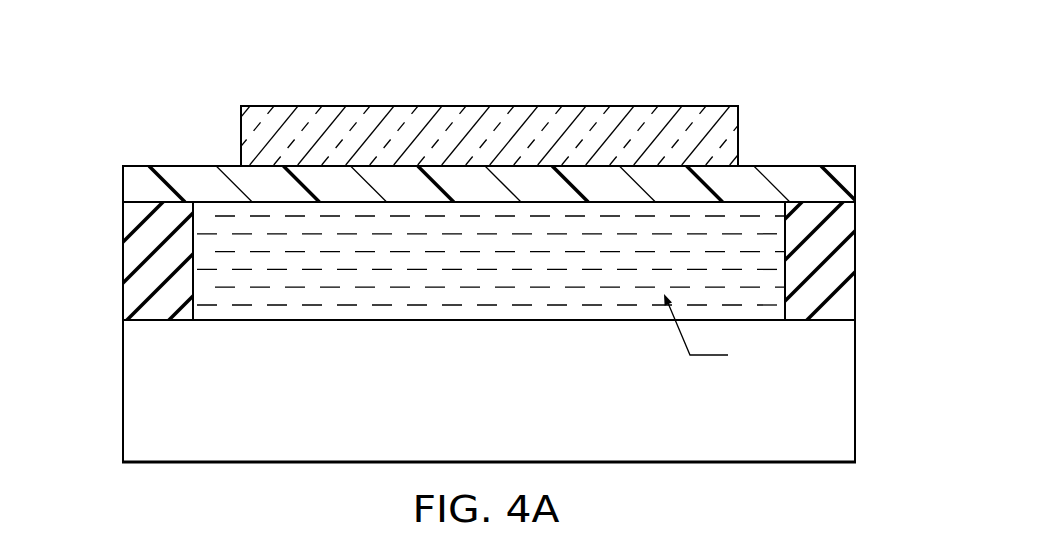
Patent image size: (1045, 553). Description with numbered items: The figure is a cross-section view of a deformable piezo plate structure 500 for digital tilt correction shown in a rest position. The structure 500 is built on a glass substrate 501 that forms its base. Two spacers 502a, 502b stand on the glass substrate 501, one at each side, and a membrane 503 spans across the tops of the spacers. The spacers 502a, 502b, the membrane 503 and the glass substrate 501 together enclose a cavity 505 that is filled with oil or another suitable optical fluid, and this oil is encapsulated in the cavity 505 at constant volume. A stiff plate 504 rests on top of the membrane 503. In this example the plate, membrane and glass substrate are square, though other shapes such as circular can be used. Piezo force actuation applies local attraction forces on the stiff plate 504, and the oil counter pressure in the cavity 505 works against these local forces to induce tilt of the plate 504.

The electrowetting display device 500 is at (340, 63).
The substrate 501 is at (132, 393).
The first wall / barrier 502a is at (130, 260).
The second wall / barrier 502b is at (848, 258).
The top electrode / cover layer 503 is at (130, 182).
The upper layer / plate 504 is at (512, 149).
The oil / fluid layer 505 is at (512, 273).